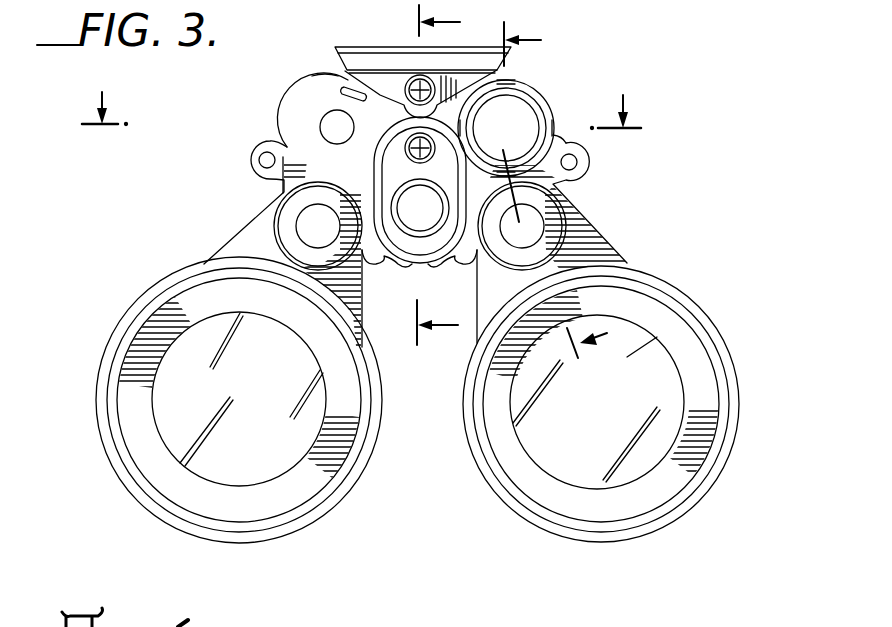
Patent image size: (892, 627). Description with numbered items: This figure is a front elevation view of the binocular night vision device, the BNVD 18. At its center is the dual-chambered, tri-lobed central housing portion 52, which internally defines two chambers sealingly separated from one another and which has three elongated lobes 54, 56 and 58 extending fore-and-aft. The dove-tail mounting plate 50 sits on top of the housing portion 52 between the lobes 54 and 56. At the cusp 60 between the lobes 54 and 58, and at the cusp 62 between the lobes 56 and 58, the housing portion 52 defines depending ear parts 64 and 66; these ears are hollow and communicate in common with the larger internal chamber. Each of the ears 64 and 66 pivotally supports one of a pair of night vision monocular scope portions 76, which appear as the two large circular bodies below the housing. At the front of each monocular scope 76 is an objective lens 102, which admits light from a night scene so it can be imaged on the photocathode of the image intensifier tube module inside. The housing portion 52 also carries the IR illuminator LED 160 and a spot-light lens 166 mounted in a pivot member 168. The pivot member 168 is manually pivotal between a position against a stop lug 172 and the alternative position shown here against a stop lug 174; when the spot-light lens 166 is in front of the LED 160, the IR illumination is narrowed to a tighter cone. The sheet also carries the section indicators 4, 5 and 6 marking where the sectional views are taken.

The BNVD 18 is at (692, 194).
The dove-tail mounting plate 50 is at (400, 47).
The central housing portion 52 is at (543, 90).
The lobe 54 is at (306, 88).
The lobe 56 is at (551, 112).
The lobe 58 is at (412, 267).
The cusp 60 is at (278, 204).
The cusp 62 is at (567, 208).
The ear part 64 is at (252, 178).
The ear part 66 is at (569, 183).
The night vision monocular scope portion 76 is at (724, 318).
The objective lens 102 is at (172, 430).
The IR illuminator LED 160 is at (320, 126).
The spot-light lens 166 is at (436, 220).
The pivot member 168 is at (376, 171).
The stop lug 172 is at (333, 73).
The stop lug 174 is at (455, 190).
The section line 4 is at (560, 194).
The section line 5 is at (449, 186).
The section line 6 is at (357, 109).